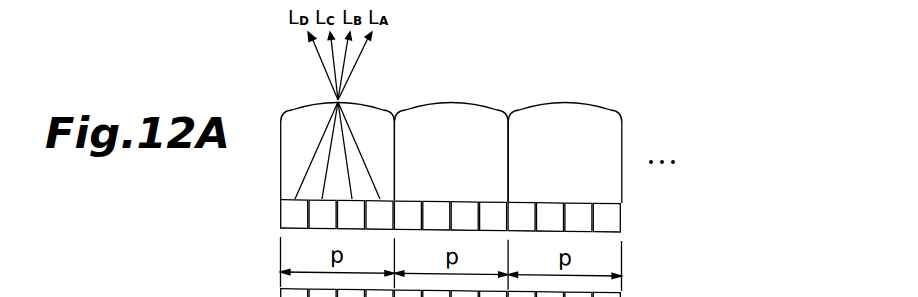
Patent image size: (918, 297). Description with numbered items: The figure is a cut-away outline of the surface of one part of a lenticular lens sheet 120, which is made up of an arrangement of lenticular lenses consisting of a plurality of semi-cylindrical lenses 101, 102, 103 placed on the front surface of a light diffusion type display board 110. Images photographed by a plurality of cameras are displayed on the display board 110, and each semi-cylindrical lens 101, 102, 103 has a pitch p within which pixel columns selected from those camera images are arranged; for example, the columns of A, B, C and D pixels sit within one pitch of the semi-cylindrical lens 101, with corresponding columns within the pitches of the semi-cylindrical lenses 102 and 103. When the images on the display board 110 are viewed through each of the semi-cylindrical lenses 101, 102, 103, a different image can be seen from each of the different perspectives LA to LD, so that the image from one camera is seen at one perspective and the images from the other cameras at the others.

The semi-cylindrical lens 101 is at (370, 116).
The semi-cylindrical lens 102 is at (463, 118).
The semi-cylindrical lens 103 is at (578, 118).
The light diffusion type display board 110 is at (622, 214).
The lenticular lens sheet 120 is at (655, 98).